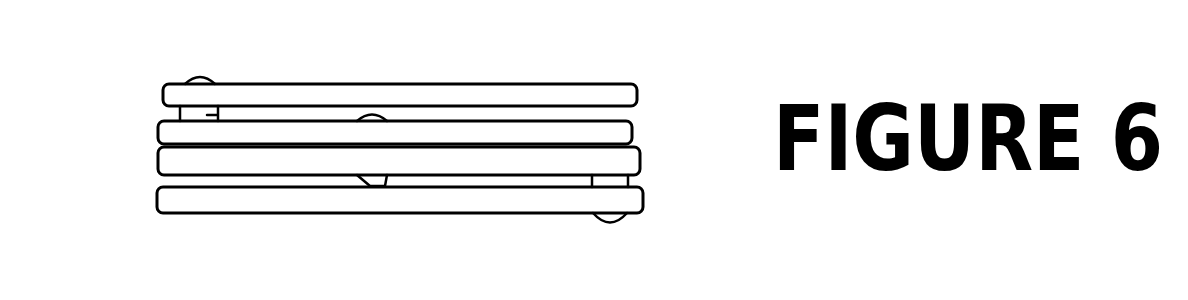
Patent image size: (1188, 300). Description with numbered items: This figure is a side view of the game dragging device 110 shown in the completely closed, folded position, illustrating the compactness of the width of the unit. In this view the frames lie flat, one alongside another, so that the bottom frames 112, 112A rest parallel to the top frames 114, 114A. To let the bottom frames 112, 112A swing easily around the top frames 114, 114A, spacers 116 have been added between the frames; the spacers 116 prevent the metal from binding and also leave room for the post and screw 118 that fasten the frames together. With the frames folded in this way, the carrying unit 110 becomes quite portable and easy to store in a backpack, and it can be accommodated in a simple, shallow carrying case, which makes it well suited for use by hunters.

The game dragging device 110 is at (664, 86).
The bottom frame 112 is at (498, 90).
The bottom frame 112A is at (482, 202).
The top frame 114 is at (632, 139).
The top frame 114A is at (634, 165).
The spacer 116 is at (228, 107).
The post and screw 118 is at (388, 183).